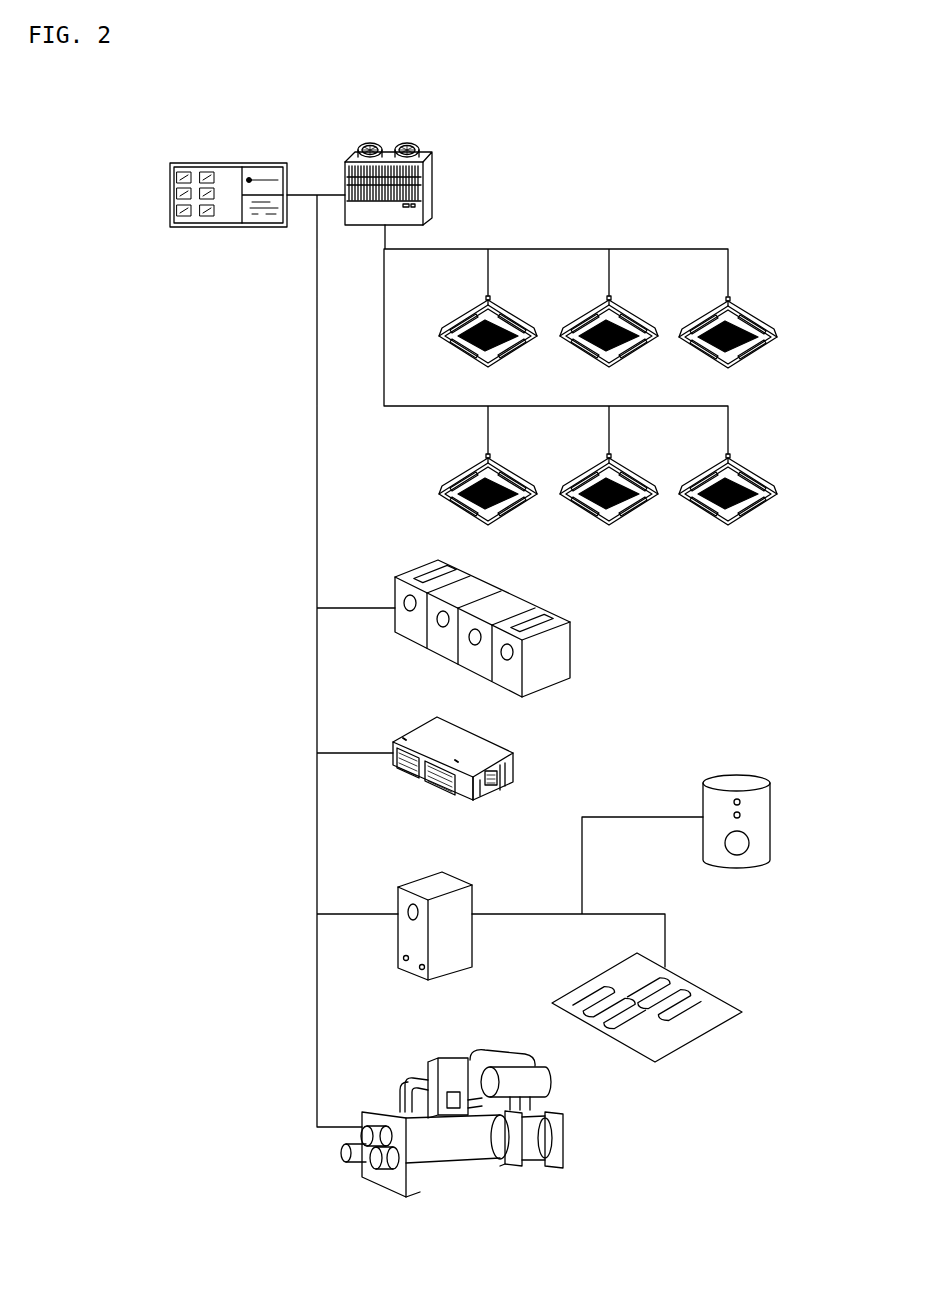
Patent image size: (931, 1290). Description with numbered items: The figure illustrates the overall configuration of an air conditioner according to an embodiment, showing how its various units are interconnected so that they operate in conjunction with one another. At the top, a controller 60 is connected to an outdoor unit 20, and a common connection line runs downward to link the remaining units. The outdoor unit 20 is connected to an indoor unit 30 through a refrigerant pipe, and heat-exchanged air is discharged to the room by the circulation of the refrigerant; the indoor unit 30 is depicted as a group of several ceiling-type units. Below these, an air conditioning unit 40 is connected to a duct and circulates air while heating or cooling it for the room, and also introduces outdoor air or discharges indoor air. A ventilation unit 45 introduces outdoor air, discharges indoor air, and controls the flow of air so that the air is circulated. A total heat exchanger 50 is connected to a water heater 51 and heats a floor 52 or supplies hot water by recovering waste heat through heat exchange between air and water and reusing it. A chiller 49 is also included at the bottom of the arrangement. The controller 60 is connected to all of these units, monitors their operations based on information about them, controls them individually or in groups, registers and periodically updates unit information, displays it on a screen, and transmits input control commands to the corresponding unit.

The controller 60 is at (268, 163).
The outdoor unit 20 is at (417, 153).
The indoor unit 30 is at (783, 282).
The air conditioning unit 40 is at (570, 650).
The ventilation unit 45 is at (513, 757).
The total heat exchanger 50 is at (452, 882).
The water heater 51 is at (728, 778).
The floor 52 is at (702, 987).
The chiller 49 is at (445, 1140).